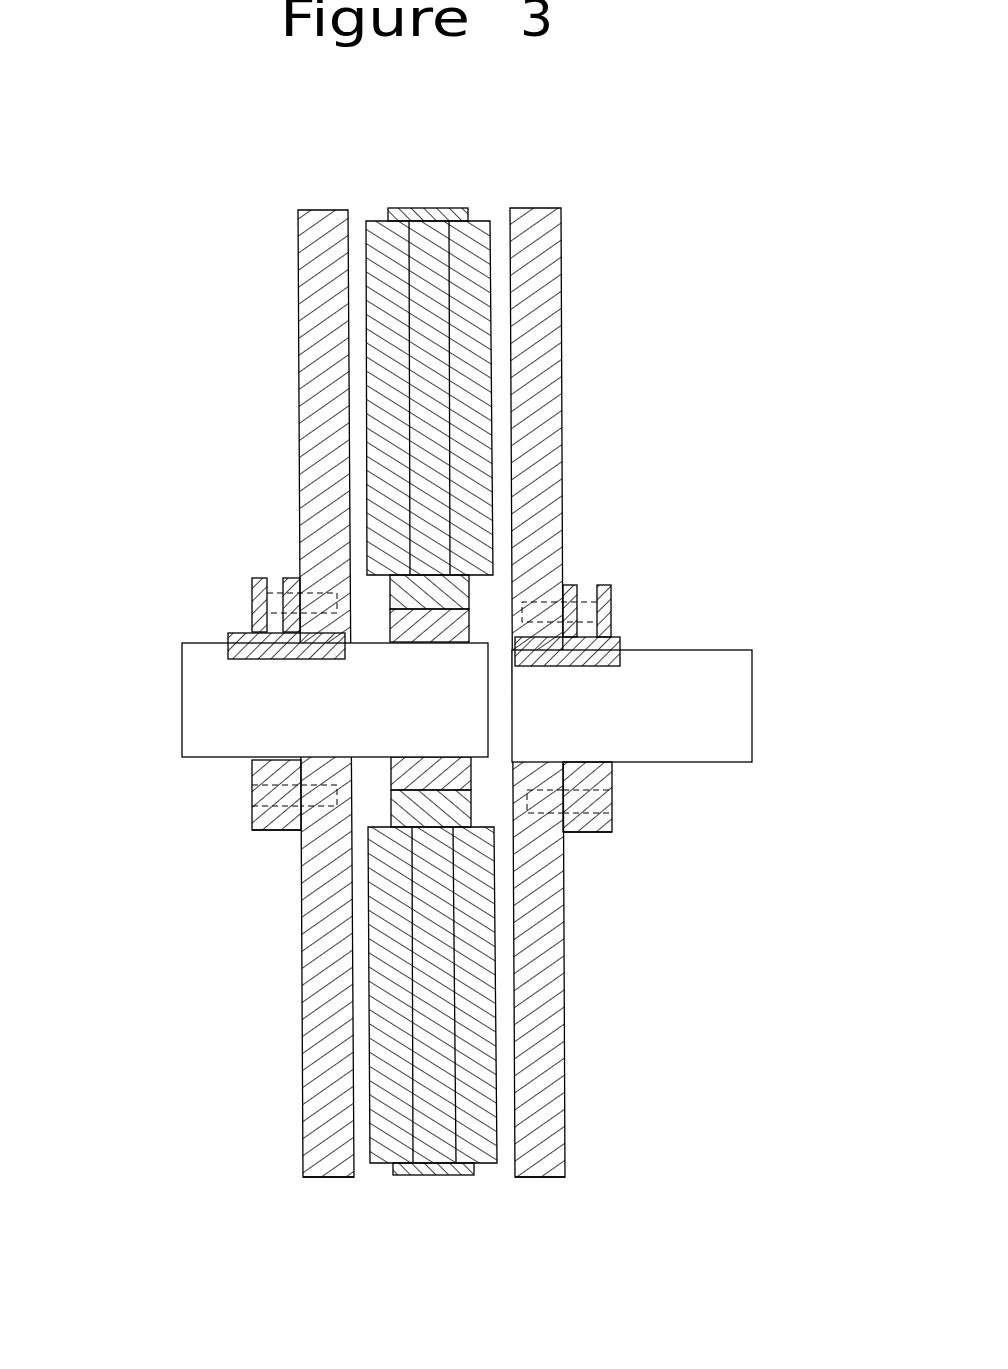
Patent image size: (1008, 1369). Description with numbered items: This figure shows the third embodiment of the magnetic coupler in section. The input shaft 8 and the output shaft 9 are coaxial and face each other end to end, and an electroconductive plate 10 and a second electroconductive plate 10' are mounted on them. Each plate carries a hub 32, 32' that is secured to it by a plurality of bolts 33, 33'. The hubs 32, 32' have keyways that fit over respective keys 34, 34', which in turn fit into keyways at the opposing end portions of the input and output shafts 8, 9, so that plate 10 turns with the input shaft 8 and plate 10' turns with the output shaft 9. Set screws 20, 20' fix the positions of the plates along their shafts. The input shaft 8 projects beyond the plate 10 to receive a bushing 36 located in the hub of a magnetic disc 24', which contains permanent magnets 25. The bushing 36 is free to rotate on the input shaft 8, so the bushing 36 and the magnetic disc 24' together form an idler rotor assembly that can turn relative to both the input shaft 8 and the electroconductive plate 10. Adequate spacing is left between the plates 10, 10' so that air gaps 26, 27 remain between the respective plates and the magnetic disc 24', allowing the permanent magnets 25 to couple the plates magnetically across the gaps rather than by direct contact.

The input shaft 8 is at (182, 697).
The output shaft 9 is at (758, 697).
The electroconductive plate 10 is at (270, 647).
The electroconductive plate 10' is at (604, 647).
The set screw 20 is at (257, 517).
The set screw 20' is at (593, 510).
The magnetic disc 24' is at (466, 169).
The permanent magnets 25 is at (422, 1068).
The air gap 26 is at (356, 1179).
The air gap 27 is at (510, 1178).
The hub 32 is at (231, 884).
The hub 32' is at (604, 886).
The bolts 33 is at (206, 795).
The bolts 33' is at (659, 811).
The key 34 is at (191, 604).
The key 34' is at (663, 609).
The bushing 36 is at (390, 800).